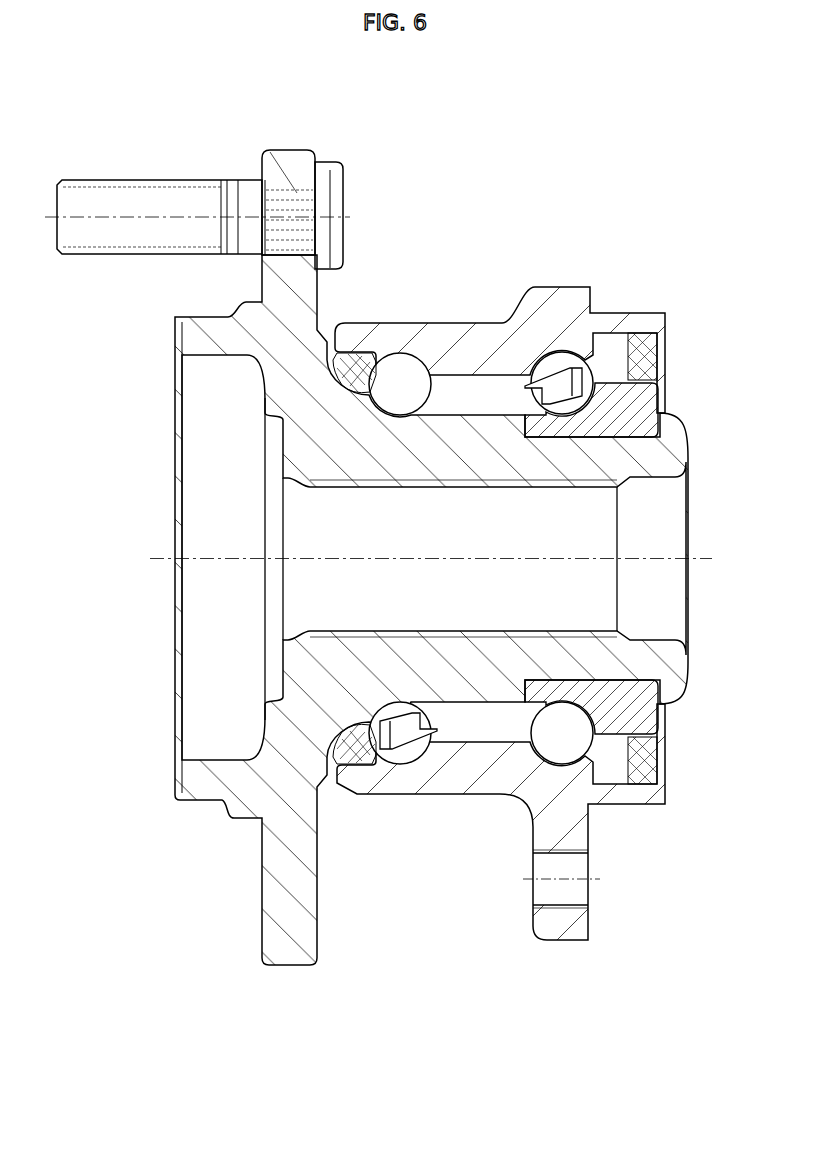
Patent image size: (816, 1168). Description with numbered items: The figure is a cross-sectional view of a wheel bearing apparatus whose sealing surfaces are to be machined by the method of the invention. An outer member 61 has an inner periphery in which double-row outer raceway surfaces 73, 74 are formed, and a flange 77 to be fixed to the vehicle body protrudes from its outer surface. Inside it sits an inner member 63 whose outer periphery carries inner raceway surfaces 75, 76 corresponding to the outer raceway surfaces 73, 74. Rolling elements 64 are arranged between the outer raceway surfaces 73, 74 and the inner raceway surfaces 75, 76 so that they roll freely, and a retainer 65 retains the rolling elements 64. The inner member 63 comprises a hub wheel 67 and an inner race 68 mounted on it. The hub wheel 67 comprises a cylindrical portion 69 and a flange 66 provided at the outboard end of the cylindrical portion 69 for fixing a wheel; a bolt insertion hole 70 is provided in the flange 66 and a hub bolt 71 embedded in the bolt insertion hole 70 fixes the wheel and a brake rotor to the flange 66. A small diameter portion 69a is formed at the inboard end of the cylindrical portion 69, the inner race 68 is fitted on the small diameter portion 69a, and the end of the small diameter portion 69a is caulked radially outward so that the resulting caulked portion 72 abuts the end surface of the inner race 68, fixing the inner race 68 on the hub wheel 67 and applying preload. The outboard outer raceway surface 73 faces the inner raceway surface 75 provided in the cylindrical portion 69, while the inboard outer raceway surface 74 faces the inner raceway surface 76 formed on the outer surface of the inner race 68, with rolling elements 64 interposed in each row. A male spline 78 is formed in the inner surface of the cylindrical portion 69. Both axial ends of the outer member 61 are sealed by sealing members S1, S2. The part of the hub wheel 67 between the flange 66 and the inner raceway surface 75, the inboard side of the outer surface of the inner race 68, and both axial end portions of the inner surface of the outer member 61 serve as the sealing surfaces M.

The outer member 61 is at (477, 338).
The inner member 63 is at (503, 712).
The rolling elements 64 is at (596, 345).
The retainer 65 is at (560, 406).
The flange 66 is at (278, 272).
The hub wheel 67 is at (485, 705).
The inner race 68 is at (662, 402).
The cylindrical portion 69 is at (484, 652).
The small diameter portion 69a is at (668, 718).
The bolt insertion hole 70 is at (322, 192).
The hub bolt 71 is at (142, 179).
The caulked portion 72 is at (688, 422).
The outer raceway surface 73 is at (408, 362).
The outer raceway surface 74 is at (556, 348).
The inner raceway surface 75 is at (400, 402).
The inner raceway surface 76 is at (590, 440).
The flange 77 is at (568, 927).
The male spline 78 is at (603, 628).
The sealing member S1 is at (350, 340).
The sealing member S2 is at (660, 352).
The sealing surface M is at (367, 394).